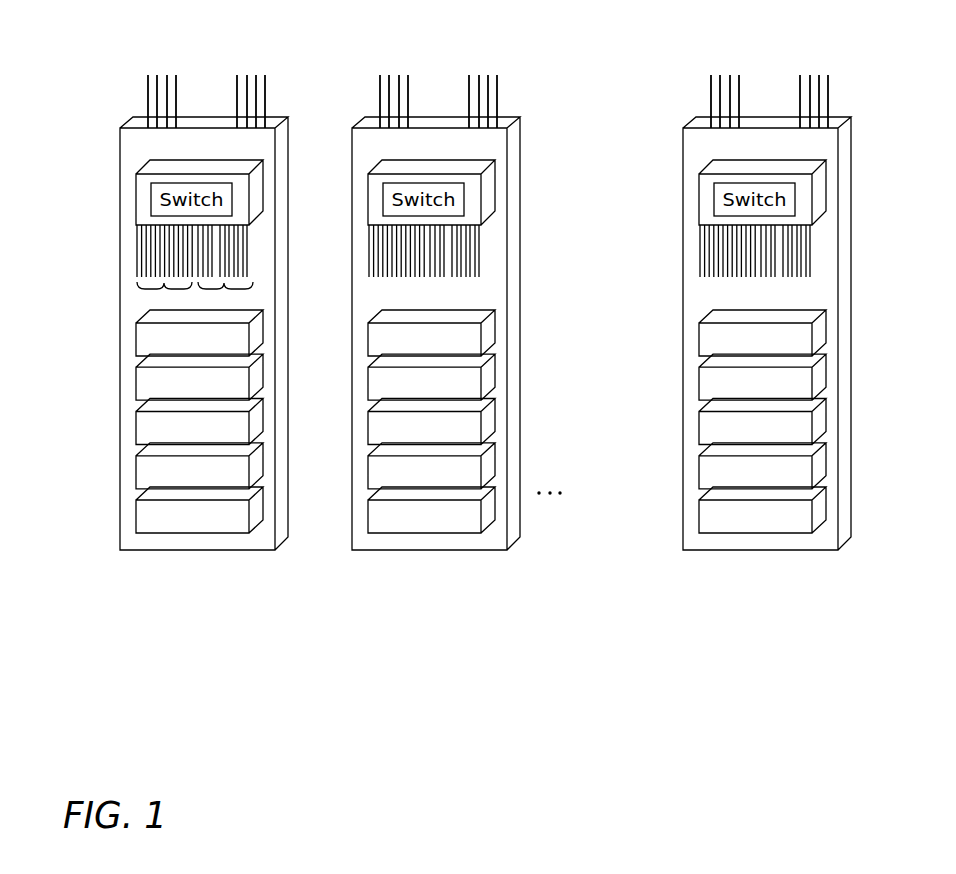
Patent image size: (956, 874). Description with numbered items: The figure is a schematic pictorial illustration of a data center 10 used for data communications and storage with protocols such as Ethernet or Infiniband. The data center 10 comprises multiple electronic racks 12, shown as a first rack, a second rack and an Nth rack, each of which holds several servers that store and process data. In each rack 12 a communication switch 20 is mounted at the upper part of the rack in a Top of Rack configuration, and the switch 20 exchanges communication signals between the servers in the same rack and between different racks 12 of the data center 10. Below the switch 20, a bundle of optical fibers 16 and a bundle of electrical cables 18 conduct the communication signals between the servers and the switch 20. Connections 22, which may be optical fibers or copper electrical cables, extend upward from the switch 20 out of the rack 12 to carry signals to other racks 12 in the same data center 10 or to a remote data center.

The data center 10 is at (117, 72).
The electronic rack 12 is at (192, 596).
The optical fibers 16 is at (137, 287).
The electrical cables 18 is at (253, 286).
The communication switch 20 is at (136, 198).
The connections 22 is at (176, 75).